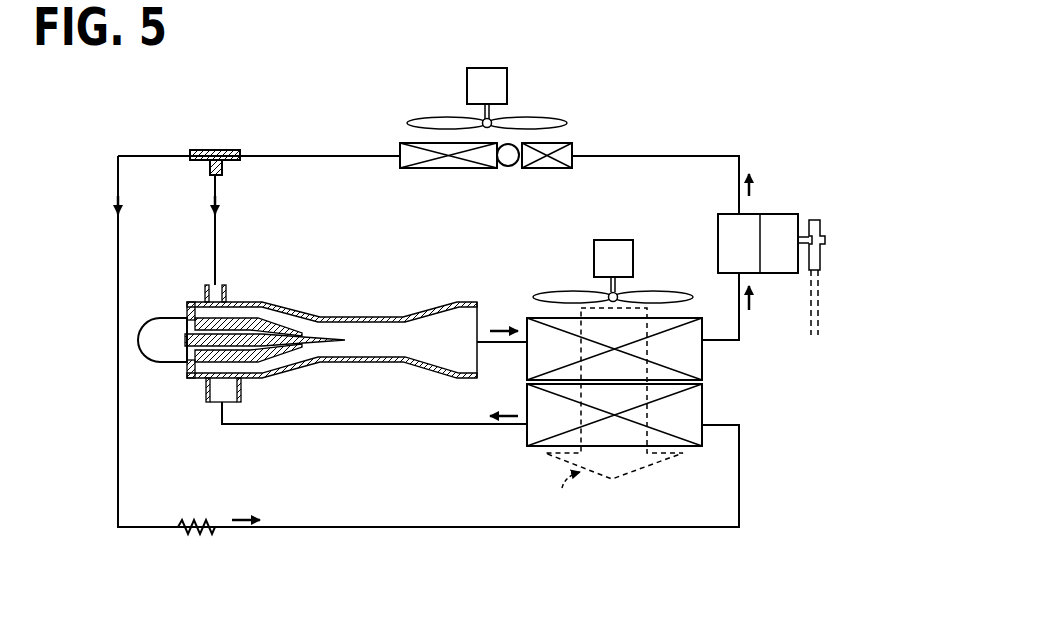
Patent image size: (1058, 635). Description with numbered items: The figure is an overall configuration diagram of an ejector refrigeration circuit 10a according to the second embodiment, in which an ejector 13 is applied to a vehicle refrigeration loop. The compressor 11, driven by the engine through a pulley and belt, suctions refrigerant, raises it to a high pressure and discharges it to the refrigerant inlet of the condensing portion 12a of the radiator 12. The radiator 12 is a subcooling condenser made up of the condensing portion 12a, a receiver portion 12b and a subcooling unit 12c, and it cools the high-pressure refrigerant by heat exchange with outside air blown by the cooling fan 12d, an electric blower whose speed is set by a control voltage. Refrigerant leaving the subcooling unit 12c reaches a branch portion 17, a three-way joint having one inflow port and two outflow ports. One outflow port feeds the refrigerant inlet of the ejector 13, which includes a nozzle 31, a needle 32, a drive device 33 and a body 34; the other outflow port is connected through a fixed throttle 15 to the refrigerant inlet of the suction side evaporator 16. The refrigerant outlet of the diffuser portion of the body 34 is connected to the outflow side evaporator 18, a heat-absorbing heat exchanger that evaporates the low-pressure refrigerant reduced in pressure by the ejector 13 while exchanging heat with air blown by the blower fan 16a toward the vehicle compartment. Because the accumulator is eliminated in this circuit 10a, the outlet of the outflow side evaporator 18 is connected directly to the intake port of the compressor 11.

The ejector refrigeration circuit 10a is at (690, 113).
The compressor 11 is at (785, 213).
The radiator 12 is at (461, 146).
The condensing portion 12a is at (430, 170).
The receiver portion 12b is at (508, 168).
The subcooling unit 12c is at (566, 170).
The cooling fan 12d is at (507, 84).
The ejector 13 is at (307, 331).
The fixed throttle 15 is at (198, 520).
The suction side evaporator 16 is at (582, 382).
The blower fan 16a is at (594, 264).
The branch portion 17 is at (214, 150).
The outflow side evaporator 18 is at (527, 320).
The nozzle 31 is at (250, 328).
The needle 32 is at (299, 328).
The drive device 33 is at (162, 318).
The body 34 is at (378, 363).